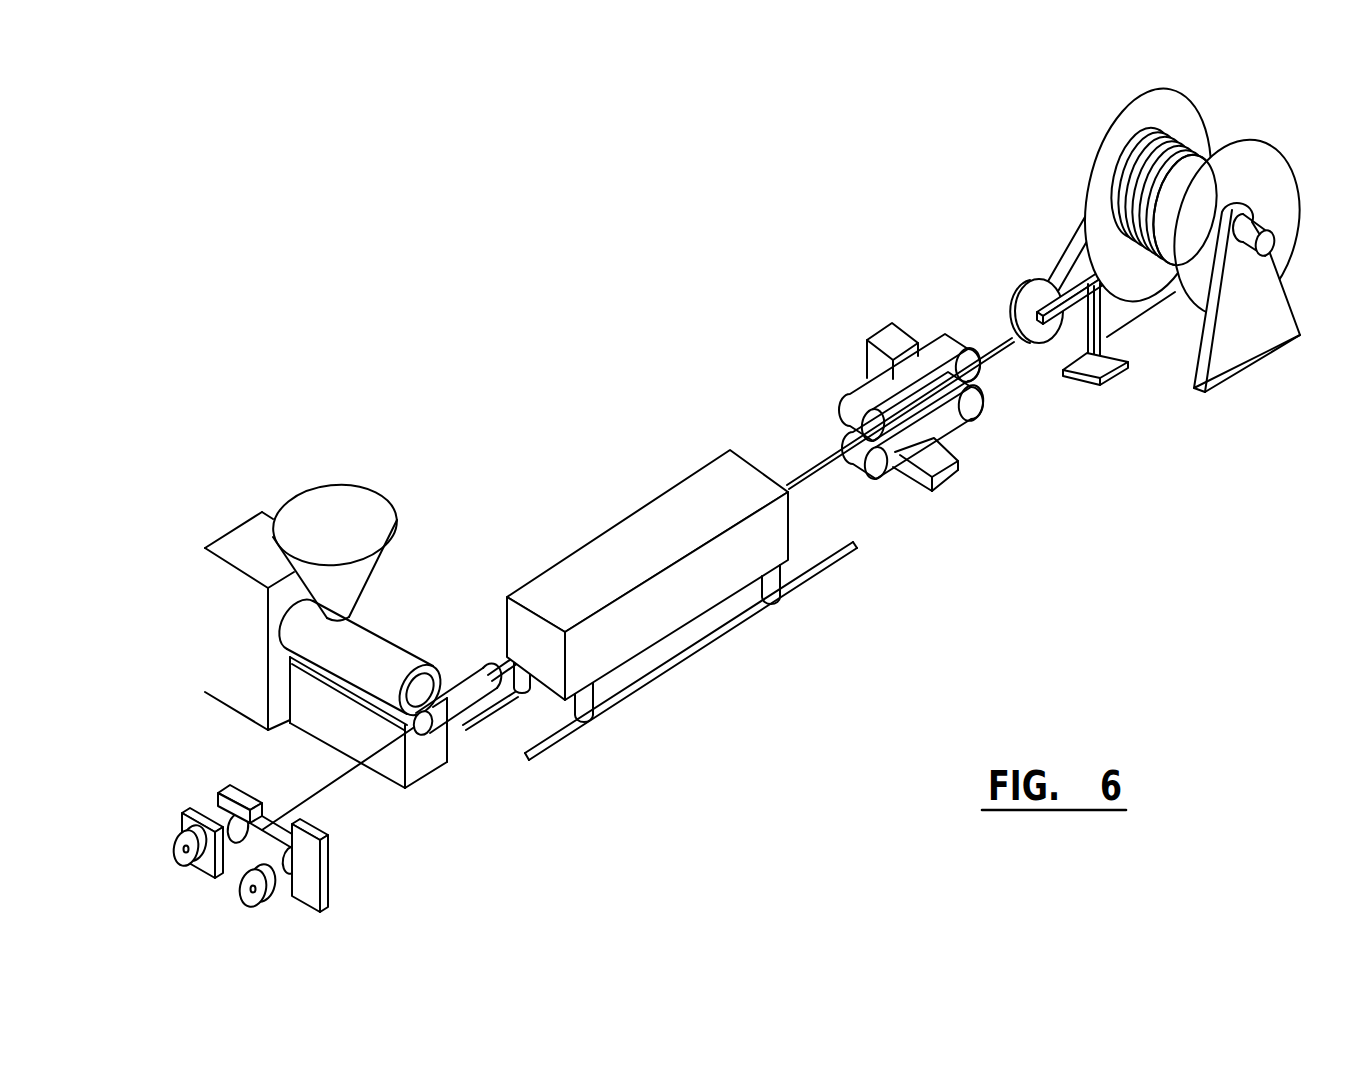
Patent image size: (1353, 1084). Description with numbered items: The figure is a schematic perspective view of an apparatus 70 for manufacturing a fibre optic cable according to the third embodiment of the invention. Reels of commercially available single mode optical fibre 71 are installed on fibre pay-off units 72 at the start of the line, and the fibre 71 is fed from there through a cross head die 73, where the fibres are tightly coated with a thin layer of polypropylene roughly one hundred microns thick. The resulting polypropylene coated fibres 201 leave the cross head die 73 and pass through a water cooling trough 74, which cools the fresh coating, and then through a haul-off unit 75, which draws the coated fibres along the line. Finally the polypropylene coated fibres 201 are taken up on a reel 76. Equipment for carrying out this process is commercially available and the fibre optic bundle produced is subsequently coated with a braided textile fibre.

The apparatus 70 is at (1020, 240).
The single mode optical fibre 71 is at (327, 787).
The fibre pay-off units 72 is at (238, 892).
The cross head die 73 is at (458, 664).
The water cooling trough 74 is at (682, 598).
The haul-off unit 75 is at (887, 337).
The reel 76 is at (1110, 132).
The polypropylene coated fibres 201 is at (997, 357).